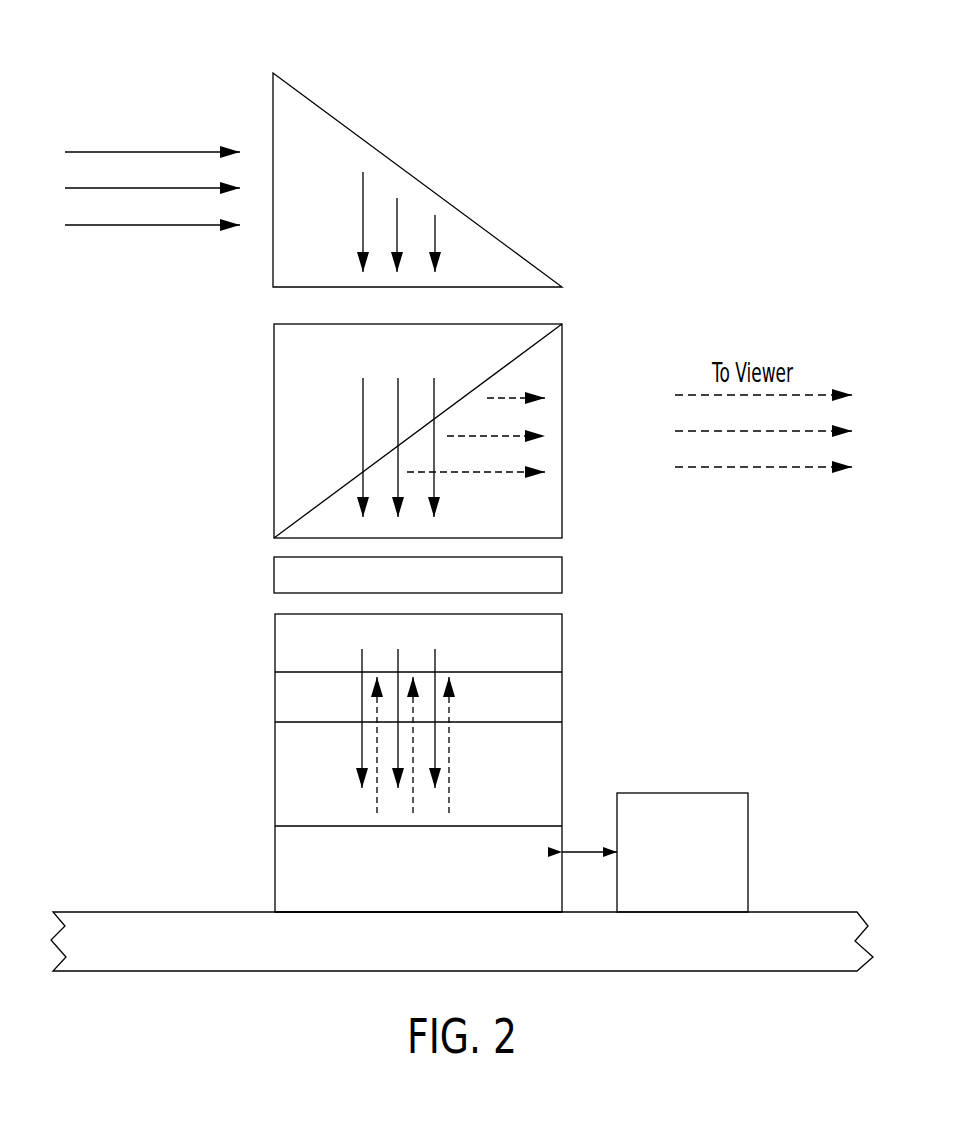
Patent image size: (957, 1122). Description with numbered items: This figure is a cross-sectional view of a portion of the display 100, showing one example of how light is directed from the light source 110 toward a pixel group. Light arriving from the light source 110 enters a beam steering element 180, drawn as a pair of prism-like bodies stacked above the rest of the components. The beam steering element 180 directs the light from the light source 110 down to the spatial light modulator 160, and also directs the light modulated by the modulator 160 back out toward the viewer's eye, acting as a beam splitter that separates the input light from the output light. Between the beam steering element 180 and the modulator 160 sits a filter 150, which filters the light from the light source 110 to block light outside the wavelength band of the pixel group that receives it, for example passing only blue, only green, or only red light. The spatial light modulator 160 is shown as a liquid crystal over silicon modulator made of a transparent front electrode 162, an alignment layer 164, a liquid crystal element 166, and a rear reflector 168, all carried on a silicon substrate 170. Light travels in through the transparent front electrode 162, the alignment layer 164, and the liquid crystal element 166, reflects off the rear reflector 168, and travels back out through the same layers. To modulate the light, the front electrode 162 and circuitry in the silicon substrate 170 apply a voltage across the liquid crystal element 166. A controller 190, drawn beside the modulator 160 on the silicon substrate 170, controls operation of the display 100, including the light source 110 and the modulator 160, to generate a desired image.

The display 100 is at (178, 100).
The light source 110 is at (150, 312).
The filter 150 is at (567, 578).
The spatial light modulator 160 is at (422, 761).
The transparent front electrode 162 is at (279, 645).
The alignment layer 164 is at (279, 698).
The liquid crystal element 166 is at (279, 777).
The rear reflector 168 is at (279, 866).
The silicon substrate 170 is at (432, 960).
The beam steering element 180 is at (542, 257).
The controller 190 is at (698, 871).